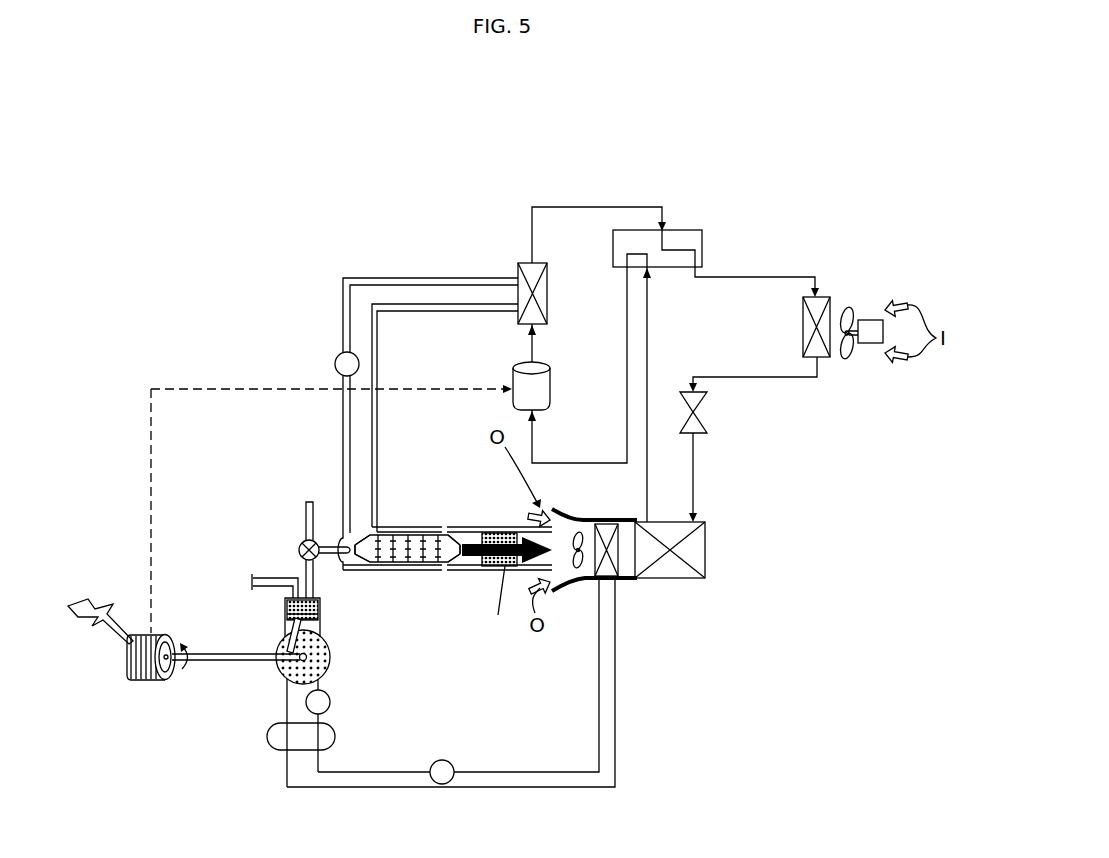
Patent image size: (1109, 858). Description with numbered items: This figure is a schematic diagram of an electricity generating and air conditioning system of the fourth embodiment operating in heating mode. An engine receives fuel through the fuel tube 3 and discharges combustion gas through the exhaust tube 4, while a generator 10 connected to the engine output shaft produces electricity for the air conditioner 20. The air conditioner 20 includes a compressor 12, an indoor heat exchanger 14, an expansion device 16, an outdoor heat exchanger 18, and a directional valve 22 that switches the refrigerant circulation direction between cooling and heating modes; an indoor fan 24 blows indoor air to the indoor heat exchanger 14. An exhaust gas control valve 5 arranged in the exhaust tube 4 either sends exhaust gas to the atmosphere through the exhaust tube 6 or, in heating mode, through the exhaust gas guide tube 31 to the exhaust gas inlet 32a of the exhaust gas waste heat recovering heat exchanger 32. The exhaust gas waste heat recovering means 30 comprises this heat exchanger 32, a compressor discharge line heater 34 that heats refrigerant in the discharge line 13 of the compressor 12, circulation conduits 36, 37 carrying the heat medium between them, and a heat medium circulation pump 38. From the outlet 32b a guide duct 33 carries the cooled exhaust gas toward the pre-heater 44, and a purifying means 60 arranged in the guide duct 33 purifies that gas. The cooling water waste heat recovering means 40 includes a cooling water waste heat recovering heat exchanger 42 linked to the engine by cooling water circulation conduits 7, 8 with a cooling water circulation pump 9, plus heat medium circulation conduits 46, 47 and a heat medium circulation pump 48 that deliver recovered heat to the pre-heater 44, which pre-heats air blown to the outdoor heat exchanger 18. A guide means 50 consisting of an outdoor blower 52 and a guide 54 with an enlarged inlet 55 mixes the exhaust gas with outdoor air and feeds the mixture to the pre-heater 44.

The fuel tube 3 is at (275, 582).
The exhaust tube 4 is at (306, 570).
The exhaust gas control valve 5 is at (300, 545).
The exhaust tube 6 is at (308, 512).
The cooling water circulation conduit 7 is at (286, 710).
The cooling water circulation conduit 8 is at (320, 682).
The cooling water circulation pump 9 is at (331, 702).
The generator 10 is at (143, 670).
The compressor 12 is at (552, 395).
The discharge line 13 is at (534, 345).
The indoor heat exchanger 14 is at (803, 312).
The expansion device 16 is at (708, 424).
The outdoor heat exchanger 18 is at (706, 528).
The air conditioner 20 is at (715, 344).
The directional valve 22 is at (702, 230).
The indoor fan 24 is at (848, 357).
The exhaust gas waste heat recovering means 30 is at (431, 380).
The exhaust gas guide tube 31 is at (335, 545).
The exhaust gas waste heat recovering heat exchanger 32 is at (408, 565).
The exhaust gas inlet 32a is at (365, 568).
The outlet 32b is at (450, 567).
The guide duct 33 is at (447, 548).
The compressor discharge line heater 34 is at (518, 277).
The circulation conduit 36 is at (343, 315).
The circulation conduit 37 is at (425, 305).
The heat medium circulation pump 38 is at (335, 364).
The cooling water waste heat recovering means 40 is at (500, 705).
The cooling water waste heat recovering heat exchanger 42 is at (270, 748).
The pre-heater 44 is at (607, 527).
The heat medium circulation conduit 46 is at (560, 771).
The heat medium circulation conduit 47 is at (568, 788).
The heat medium circulation pump 48 is at (448, 761).
The guide means 50 is at (590, 571).
The outdoor blower 52 is at (578, 530).
The guide 54 is at (588, 583).
The enlarged inlet 55 is at (556, 508).
The purifying means 60 is at (492, 533).